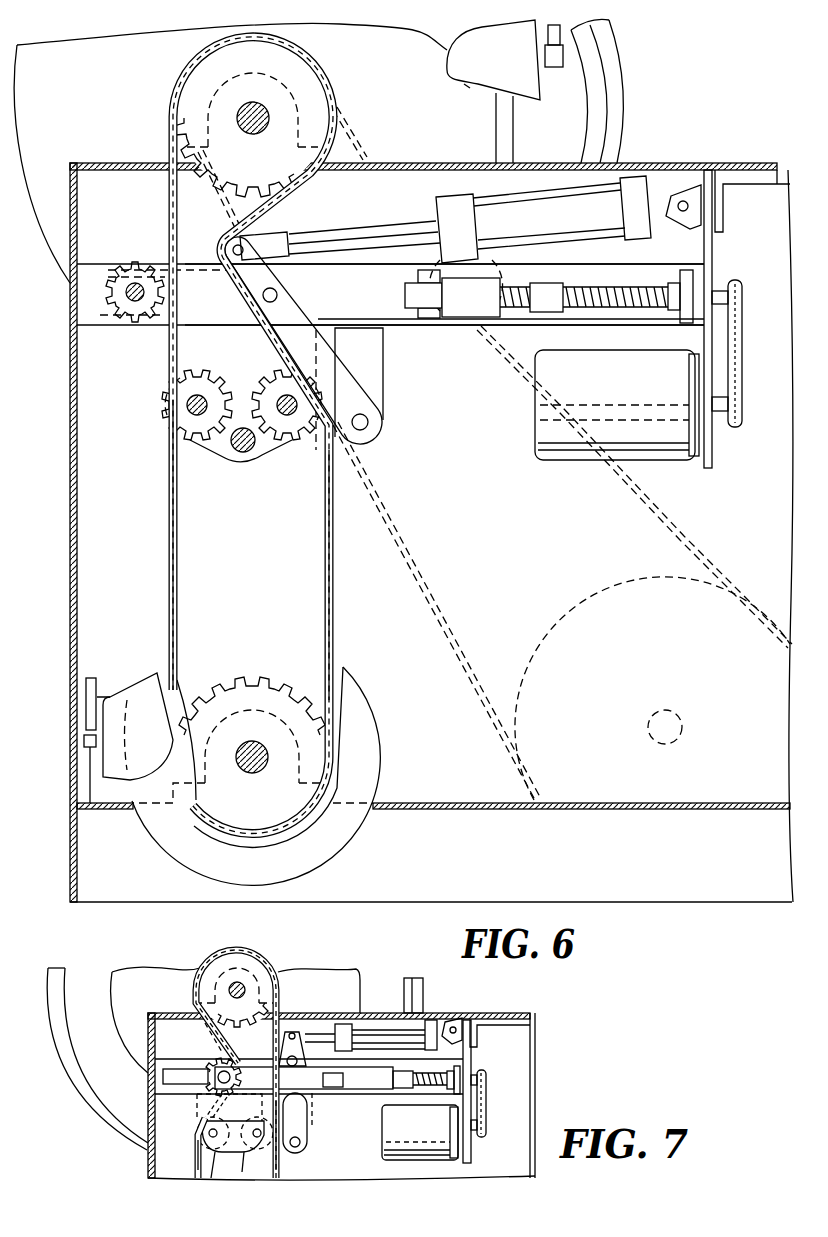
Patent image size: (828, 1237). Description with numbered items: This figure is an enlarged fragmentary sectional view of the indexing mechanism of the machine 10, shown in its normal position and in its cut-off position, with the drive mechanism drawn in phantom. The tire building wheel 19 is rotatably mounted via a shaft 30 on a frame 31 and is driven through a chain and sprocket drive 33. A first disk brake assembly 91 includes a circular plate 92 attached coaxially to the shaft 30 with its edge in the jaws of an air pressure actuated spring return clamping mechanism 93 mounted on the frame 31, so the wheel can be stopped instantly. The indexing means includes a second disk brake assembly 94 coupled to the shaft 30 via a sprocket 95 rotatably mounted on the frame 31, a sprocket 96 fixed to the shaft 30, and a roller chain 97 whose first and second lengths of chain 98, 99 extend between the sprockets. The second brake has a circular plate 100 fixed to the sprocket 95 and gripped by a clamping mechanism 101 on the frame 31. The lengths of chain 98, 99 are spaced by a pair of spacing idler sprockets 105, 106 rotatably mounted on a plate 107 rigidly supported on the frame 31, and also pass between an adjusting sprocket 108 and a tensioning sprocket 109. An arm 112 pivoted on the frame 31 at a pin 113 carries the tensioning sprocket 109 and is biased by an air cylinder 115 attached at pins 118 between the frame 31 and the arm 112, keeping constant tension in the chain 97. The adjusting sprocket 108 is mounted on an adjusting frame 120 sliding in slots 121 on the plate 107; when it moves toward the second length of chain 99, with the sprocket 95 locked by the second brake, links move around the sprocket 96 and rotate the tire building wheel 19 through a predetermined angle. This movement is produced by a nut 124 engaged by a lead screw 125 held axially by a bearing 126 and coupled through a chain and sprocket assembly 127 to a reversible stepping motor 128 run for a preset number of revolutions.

In FIG. 6, the machine 10 is at (70, 545).
In FIG. 7, the machine 10 is at (150, 1165).
In FIG. 6, the tire building wheel 19 is at (617, 72).
In FIG. 7, the tire building wheel 19 is at (424, 991).
In FIG. 6, the shaft 30 is at (253, 134).
In FIG. 7, the shaft 30 is at (237, 982).
In FIG. 6, the frame 31 is at (70, 615).
In FIG. 7, the frame 31 is at (148, 1100).
In FIG. 6, the chain and sprocket drive 33 is at (682, 544).
In FIG. 7, the chain and sprocket drive 33 is at (215, 1036).
In FIG. 6, the first disk brake assembly 91 is at (465, 84).
In FIG. 6, the circular plate 92 is at (57, 254).
In FIG. 7, the circular plate 92 is at (235, 1020).
In FIG. 6, the clamping mechanism 93 is at (448, 58).
In FIG. 6, the second disk brake assembly 94 is at (134, 814).
In FIG. 6, the sprocket 95 is at (249, 690).
In FIG. 6, the sprocket 96 is at (205, 78).
In FIG. 7, the sprocket 96 is at (222, 960).
In FIG. 6, the roller chain 97 is at (168, 574).
In FIG. 7, the roller chain 97 is at (266, 957).
In FIG. 6, the first length of chain 98 is at (168, 541).
In FIG. 7, the first length of chain 98 is at (195, 1165).
In FIG. 6, the second length of chain 99 is at (334, 574).
In FIG. 7, the second length of chain 99 is at (278, 1163).
In FIG. 6, the circular plate 100 is at (374, 749).
In FIG. 6, the clamping mechanism 101 is at (120, 717).
In FIG. 6, the spacing idler sprocket 105 is at (193, 442).
In FIG. 7, the spacing idler sprocket 105 is at (212, 1160).
In FIG. 6, the spacing idler sprocket 106 is at (296, 442).
In FIG. 7, the spacing idler sprocket 106 is at (256, 1160).
In FIG. 6, the plate 107 is at (253, 453).
In FIG. 7, the plate 107 is at (202, 1106).
In FIG. 6, the adjusting sprocket 108 is at (128, 258).
In FIG. 7, the adjusting sprocket 108 is at (220, 1064).
In FIG. 6, the tensioning sprocket 109 is at (303, 283).
In FIG. 7, the tensioning sprocket 109 is at (293, 1056).
In FIG. 6, the arm 112 is at (353, 389).
In FIG. 7, the arm 112 is at (306, 1112).
In FIG. 6, the pin 113 is at (364, 426).
In FIG. 7, the pin 113 is at (301, 1142).
In FIG. 6, the air cylinder 115 is at (553, 200).
In FIG. 7, the air cylinder 115 is at (380, 1030).
In FIG. 6, the pins 118 is at (239, 245).
In FIG. 7, the pins 118 is at (293, 1032).
In FIG. 6, the adjusting frame 120 is at (392, 316).
In FIG. 7, the adjusting frame 120 is at (365, 1090).
In FIG. 6, the slots 121 is at (113, 303).
In FIG. 7, the slots 121 is at (178, 1075).
In FIG. 6, the nut 124 is at (490, 300).
In FIG. 7, the nut 124 is at (420, 1088).
In FIG. 6, the lead screw 125 is at (643, 300).
In FIG. 7, the lead screw 125 is at (440, 1072).
In FIG. 6, the bearing 126 is at (690, 290).
In FIG. 7, the bearing 126 is at (460, 1079).
In FIG. 6, the chain and sprocket assembly 127 is at (740, 334).
In FIG. 7, the chain and sprocket assembly 127 is at (486, 1106).
In FIG. 6, the reversible stepping motor 128 is at (648, 398).
In FIG. 7, the reversible stepping motor 128 is at (386, 1150).